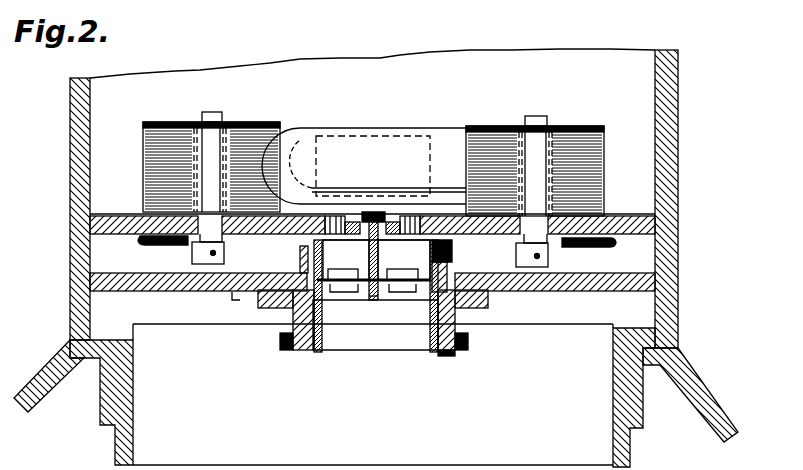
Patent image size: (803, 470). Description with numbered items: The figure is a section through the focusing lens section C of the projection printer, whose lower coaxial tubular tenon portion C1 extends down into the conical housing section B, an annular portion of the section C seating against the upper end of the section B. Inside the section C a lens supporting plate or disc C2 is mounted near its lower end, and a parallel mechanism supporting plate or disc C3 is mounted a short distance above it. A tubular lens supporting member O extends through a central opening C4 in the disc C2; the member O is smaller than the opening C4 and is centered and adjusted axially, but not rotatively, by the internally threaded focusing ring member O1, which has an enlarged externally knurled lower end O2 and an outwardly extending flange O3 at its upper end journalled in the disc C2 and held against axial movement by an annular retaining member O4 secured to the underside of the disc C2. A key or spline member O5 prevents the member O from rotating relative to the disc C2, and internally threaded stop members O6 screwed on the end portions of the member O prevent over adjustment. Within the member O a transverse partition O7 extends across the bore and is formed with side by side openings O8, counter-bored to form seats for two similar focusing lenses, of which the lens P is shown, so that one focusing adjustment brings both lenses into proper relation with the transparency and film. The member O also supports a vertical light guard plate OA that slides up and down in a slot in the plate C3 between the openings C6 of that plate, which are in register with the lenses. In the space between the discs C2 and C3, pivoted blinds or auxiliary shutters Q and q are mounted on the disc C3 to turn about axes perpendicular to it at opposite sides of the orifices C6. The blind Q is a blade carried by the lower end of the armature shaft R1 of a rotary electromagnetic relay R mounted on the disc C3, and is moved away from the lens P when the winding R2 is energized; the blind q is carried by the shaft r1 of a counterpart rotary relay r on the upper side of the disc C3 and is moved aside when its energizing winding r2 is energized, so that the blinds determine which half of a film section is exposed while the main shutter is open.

The focusing lens section C is at (679, 140).
The tenon portion C1 is at (631, 441).
The lens supporting plate C2 is at (136, 291).
The mechanism supporting plate C3 is at (108, 214).
The central opening C4 is at (300, 265).
The openings C6 is at (336, 225).
The housing section B is at (69, 349).
The rotary relay r is at (136, 149).
The shaft r1 is at (198, 258).
The energizing winding r2 is at (170, 140).
The rotary electromagnetic relay R is at (605, 189).
The armature shaft R1 is at (548, 268).
The winding R2 is at (592, 155).
The blind Q is at (475, 242).
The blind q is at (220, 302).
The light guard plate OA is at (373, 226).
The tubular lens supporting member O is at (322, 338).
The focusing ring member O1 is at (290, 322).
The knurled lower end O2 is at (290, 351).
The flange O3 is at (470, 310).
The annular retaining member O4 is at (290, 304).
The key or spline member O5 is at (450, 276).
The stop members O6 is at (453, 250).
The transverse partition O7 is at (375, 300).
The openings O8 is at (373, 260).
The focusing lens P is at (345, 290).